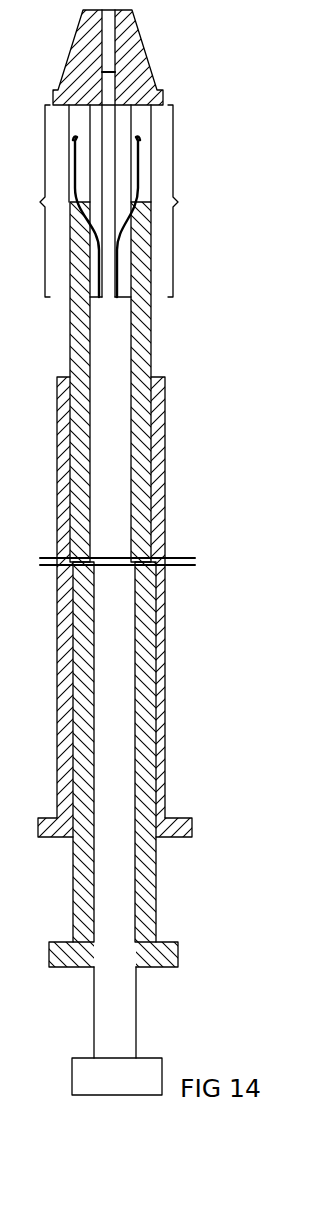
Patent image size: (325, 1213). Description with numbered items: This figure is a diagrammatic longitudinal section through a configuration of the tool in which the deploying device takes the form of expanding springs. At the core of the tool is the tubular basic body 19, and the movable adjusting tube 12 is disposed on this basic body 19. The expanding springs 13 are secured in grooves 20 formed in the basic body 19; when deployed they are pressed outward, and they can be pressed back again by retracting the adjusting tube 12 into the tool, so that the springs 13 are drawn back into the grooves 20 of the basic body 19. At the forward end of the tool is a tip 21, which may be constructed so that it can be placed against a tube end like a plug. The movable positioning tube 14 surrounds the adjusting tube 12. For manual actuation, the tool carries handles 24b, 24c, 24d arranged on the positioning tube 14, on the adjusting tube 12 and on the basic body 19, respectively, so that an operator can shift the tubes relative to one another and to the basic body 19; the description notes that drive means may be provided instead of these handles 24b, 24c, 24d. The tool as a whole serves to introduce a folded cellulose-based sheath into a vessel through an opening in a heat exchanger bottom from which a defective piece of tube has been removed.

The adjusting tube 12 is at (146, 341).
The expanding springs 13 is at (77, 170).
The positioning tube 14 is at (152, 467).
The basic body 19 is at (105, 370).
The grooves 20 is at (112, 201).
The tip 21 is at (137, 62).
The handle 24b is at (191, 826).
The handle 24c is at (178, 952).
The handle 24d is at (80, 1080).